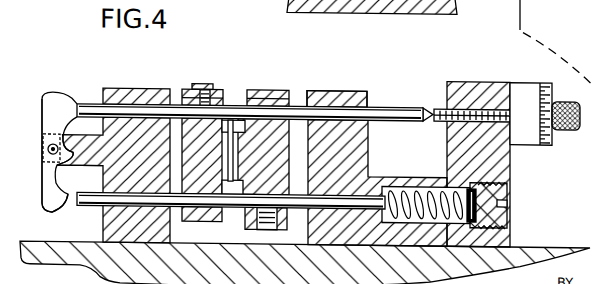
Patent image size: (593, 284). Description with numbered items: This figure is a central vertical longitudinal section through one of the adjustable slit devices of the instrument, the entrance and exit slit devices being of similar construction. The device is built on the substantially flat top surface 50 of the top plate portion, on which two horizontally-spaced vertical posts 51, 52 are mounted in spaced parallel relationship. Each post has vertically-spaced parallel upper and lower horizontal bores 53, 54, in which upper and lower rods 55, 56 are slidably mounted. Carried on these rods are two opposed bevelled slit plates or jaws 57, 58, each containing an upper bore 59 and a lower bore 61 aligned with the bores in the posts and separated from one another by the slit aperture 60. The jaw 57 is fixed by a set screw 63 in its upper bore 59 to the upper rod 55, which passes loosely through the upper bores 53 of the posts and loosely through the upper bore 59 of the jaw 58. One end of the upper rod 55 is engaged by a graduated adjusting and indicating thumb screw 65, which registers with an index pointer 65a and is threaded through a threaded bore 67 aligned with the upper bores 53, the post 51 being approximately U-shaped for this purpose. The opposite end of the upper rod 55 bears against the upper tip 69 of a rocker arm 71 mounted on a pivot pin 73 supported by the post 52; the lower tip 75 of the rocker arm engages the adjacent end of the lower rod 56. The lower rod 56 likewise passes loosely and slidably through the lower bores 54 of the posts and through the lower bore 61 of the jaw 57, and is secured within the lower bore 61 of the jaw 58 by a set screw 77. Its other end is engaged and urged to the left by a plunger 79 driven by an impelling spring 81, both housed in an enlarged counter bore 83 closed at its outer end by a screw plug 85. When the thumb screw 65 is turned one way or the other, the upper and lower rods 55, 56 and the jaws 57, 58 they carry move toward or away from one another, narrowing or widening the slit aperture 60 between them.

The top surface 50 is at (538, 244).
The vertical post 51 is at (351, 87).
The vertical post 52 is at (110, 89).
The upper horizontal bore 53 is at (123, 91).
The lower horizontal bore 54 is at (114, 195).
The upper rod 55 is at (382, 107).
The lower rod 56 is at (347, 231).
The slit plate or jaw 57 is at (180, 87).
The slit plate or jaw 58 is at (257, 85).
The upper bore 59 is at (224, 93).
The entrance slit aperture 60 is at (233, 119).
The lower bore 61 is at (182, 229).
The set screw 63 is at (204, 80).
The adjusting and indicating thumb screw 65 is at (542, 143).
The index pointer 65a is at (497, 80).
The threaded bore 67 is at (443, 107).
The upper tip 69 is at (69, 103).
The rocker arm 71 is at (60, 127).
The pivot pin 73 is at (47, 156).
The lower tip 75 is at (58, 210).
The set screw 77 is at (258, 232).
The plunger 79 is at (395, 185).
The impelling spring 81 is at (416, 185).
The counter bore 83 is at (410, 225).
The screw plug 85 is at (507, 197).